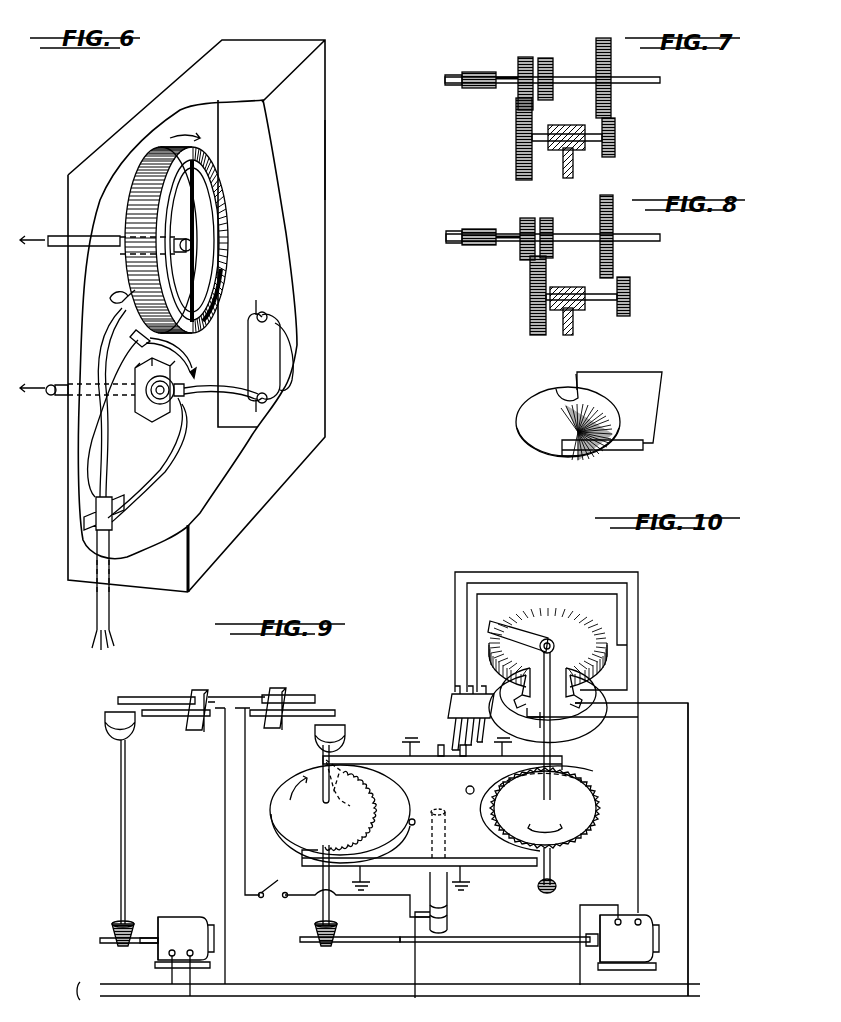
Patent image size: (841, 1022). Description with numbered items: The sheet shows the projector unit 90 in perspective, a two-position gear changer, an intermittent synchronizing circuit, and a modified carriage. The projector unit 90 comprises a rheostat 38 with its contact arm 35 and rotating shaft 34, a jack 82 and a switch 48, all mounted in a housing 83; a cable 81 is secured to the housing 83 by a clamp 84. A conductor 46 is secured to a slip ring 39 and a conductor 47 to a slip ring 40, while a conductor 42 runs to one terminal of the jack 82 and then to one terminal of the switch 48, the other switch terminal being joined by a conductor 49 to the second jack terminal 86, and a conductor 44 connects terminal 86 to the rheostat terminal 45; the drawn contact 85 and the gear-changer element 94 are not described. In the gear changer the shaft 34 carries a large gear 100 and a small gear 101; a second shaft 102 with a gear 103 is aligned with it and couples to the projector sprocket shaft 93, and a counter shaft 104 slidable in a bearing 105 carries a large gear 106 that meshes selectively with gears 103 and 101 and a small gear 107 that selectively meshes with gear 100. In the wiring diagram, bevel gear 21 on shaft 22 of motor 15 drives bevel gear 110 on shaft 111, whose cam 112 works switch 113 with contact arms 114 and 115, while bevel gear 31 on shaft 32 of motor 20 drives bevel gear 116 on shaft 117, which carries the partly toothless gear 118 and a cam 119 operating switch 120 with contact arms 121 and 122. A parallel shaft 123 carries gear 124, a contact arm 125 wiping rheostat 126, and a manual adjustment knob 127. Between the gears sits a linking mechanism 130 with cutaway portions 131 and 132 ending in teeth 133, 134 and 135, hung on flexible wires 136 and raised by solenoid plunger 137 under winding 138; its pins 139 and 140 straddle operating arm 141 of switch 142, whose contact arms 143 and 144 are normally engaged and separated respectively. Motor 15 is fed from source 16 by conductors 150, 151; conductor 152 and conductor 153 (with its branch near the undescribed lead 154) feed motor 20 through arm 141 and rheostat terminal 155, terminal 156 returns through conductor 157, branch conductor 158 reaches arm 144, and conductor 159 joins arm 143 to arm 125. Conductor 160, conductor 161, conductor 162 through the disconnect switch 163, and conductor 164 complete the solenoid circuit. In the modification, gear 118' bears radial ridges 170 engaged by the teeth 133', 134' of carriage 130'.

In FIG. 9, the motor 15 is at (190, 947).
In FIG. 9, the source of electric current 16 is at (376, 991).
In FIG. 9, the motor 20 is at (636, 943).
In FIG. 9, the bevel gear 21 is at (140, 930).
In FIG. 9, the shaft 22 is at (140, 946).
In FIG. 9, the bevel gear 31 is at (345, 936).
In FIG. 9, the shaft 32 is at (395, 930).
In FIG. 6, the rotating shaft 34 is at (55, 234).
In FIG. 7, the rotating shaft 34 is at (630, 86).
In FIG. 8, the rotating shaft 34 is at (640, 242).
In FIG. 6, the contact arm 35 is at (196, 268).
In FIG. 6, the rheostat 38 is at (208, 170).
In FIG. 6, the slip ring 39 is at (212, 282).
In FIG. 6, the slip ring 40 is at (218, 292).
In FIG. 6, the conductor 42 is at (228, 398).
In FIG. 6, the conductor 44 is at (180, 352).
In FIG. 6, the terminal 45 is at (112, 292).
In FIG. 6, the conductor 46 is at (118, 357).
In FIG. 6, the conductor 47 is at (80, 455).
In FIG. 6, the switch 48 is at (272, 312).
In FIG. 6, the conductor 49 is at (245, 345).
In FIG. 6, the cable 81 is at (112, 546).
In FIG. 6, the jack 82 is at (57, 398).
In FIG. 6, the housing 83 is at (320, 136).
In FIG. 6, the clamp 84 is at (116, 522).
In FIG. 6, the contact 85 is at (172, 408).
In FIG. 6, the terminal 86 is at (198, 375).
In FIG. 6, the projector unit 90 is at (295, 533).
In FIG. 7, the projector sprocket shaft 93 is at (448, 76).
In FIG. 8, the projector sprocket shaft 93 is at (450, 244).
In FIG. 7, the collar 94 is at (482, 72).
In FIG. 8, the collar 94 is at (470, 246).
In FIG. 7, the large gear 100 is at (605, 38).
In FIG. 8, the large gear 100 is at (612, 196).
In FIG. 7, the small gear 101 is at (552, 60).
In FIG. 8, the small gear 101 is at (552, 222).
In FIG. 7, the second shaft 102 is at (506, 76).
In FIG. 8, the second shaft 102 is at (505, 232).
In FIG. 7, the gear 103 is at (526, 57).
In FIG. 8, the gear 103 is at (528, 218).
In FIG. 7, the counter shaft 104 is at (586, 126).
In FIG. 8, the counter shaft 104 is at (588, 304).
In FIG. 7, the bearing 105 is at (573, 172).
In FIG. 8, the bearing 105 is at (568, 336).
In FIG. 7, the large gear 106 is at (516, 148).
In FIG. 8, the large gear 106 is at (530, 320).
In FIG. 7, the small gear 107 is at (616, 146).
In FIG. 8, the small gear 107 is at (630, 294).
In FIG. 9, the bevel gear 110 is at (112, 922).
In FIG. 9, the shaft 111 is at (120, 832).
In FIG. 9, the cam 112 is at (106, 736).
In FIG. 9, the switch 113 is at (196, 730).
In FIG. 9, the contact arm 114 is at (140, 696).
In FIG. 9, the contact arm 115 is at (158, 716).
In FIG. 9, the bevel gear 116 is at (312, 922).
In FIG. 9, the shaft 117 is at (323, 900).
In FIG. 9, the gear 118 is at (340, 814).
In FIG. 10, the gear 118' is at (549, 422).
In FIG. 9, the cam 119 is at (342, 732).
In FIG. 9, the switch 120 is at (286, 690).
In FIG. 9, the contact arm 121 is at (308, 694).
In FIG. 9, the contact arm 122 is at (330, 710).
In FIG. 9, the shaft 123 is at (550, 740).
In FIG. 9, the gear 124 is at (588, 807).
In FIG. 9, the contact arm 125 is at (496, 624).
In FIG. 9, the rheostat 126 is at (586, 620).
In FIG. 9, the manual adjustment knob 127 is at (556, 886).
In FIG. 9, the linking mechanism 130 is at (432, 825).
In FIG. 10, the carriage 130' is at (640, 407).
In FIG. 9, the cutaway portion 131 is at (416, 826).
In FIG. 9, the cutaway portion 132 is at (468, 786).
In FIG. 9, the tooth 133 is at (352, 784).
In FIG. 10, the tooth 133' is at (555, 383).
In FIG. 9, the tooth 134 is at (397, 856).
In FIG. 10, the tooth 134' is at (581, 479).
In FIG. 9, the flexible wire 135 is at (588, 782).
In FIG. 9, the flexible wire 136 is at (380, 738).
In FIG. 9, the solenoid plunger 137 is at (447, 900).
In FIG. 9, the solenoid winding 138 is at (447, 918).
In FIG. 9, the pin 139 is at (441, 758).
In FIG. 9, the pin 140 is at (466, 758).
In FIG. 9, the operating arm 141 is at (455, 720).
In FIG. 9, the switch 142 is at (455, 694).
In FIG. 9, the contact arm 143 is at (478, 722).
In FIG. 9, the contact arm 144 is at (485, 735).
In FIG. 9, the conductor 150 is at (180, 970).
In FIG. 9, the conductor 151 is at (195, 968).
In FIG. 9, the conductor 152 is at (580, 964).
In FIG. 9, the conductor 153 is at (455, 586).
In FIG. 9, the wire 154 is at (607, 728).
In FIG. 9, the terminal 155 is at (538, 686).
In FIG. 9, the terminal 156 is at (570, 685).
In FIG. 9, the conductor 157 is at (690, 836).
In FIG. 9, the branch conductor 158 is at (467, 626).
In FIG. 9, the conductor 159 is at (560, 580).
In FIG. 9, the conductor 160 is at (224, 880).
In FIG. 9, the conductor 161 is at (232, 696).
In FIG. 9, the conductor 162 is at (248, 770).
In FIG. 9, the switch 163 is at (268, 898).
In FIG. 9, the conductor 164 is at (416, 964).
In FIG. 10, the radial ridges 170 is at (576, 414).